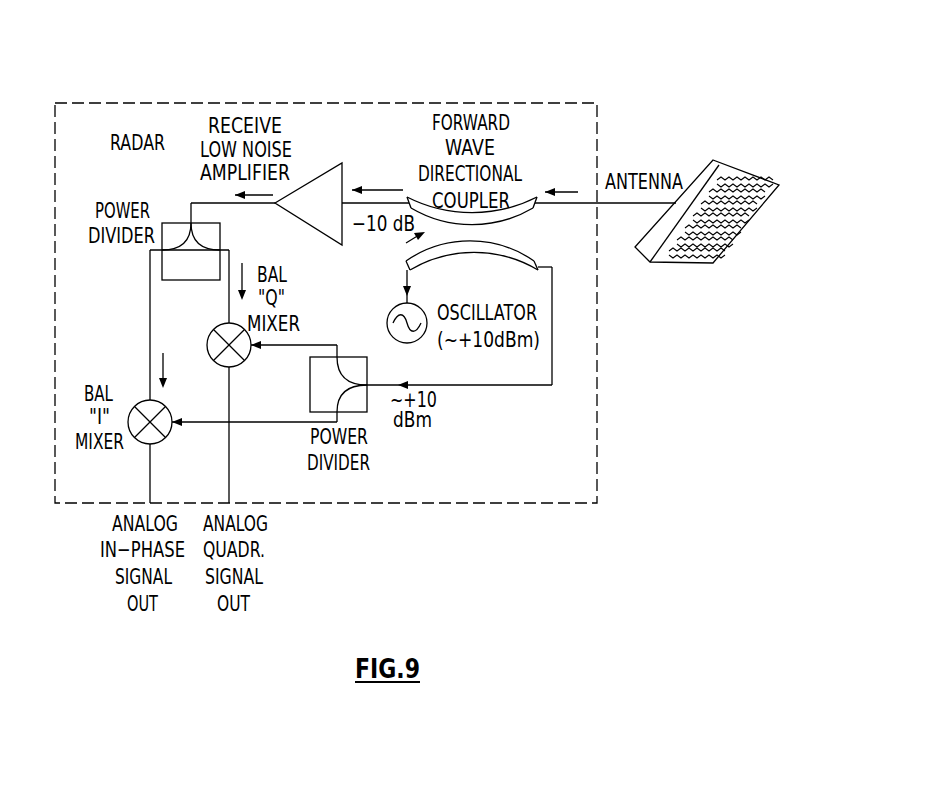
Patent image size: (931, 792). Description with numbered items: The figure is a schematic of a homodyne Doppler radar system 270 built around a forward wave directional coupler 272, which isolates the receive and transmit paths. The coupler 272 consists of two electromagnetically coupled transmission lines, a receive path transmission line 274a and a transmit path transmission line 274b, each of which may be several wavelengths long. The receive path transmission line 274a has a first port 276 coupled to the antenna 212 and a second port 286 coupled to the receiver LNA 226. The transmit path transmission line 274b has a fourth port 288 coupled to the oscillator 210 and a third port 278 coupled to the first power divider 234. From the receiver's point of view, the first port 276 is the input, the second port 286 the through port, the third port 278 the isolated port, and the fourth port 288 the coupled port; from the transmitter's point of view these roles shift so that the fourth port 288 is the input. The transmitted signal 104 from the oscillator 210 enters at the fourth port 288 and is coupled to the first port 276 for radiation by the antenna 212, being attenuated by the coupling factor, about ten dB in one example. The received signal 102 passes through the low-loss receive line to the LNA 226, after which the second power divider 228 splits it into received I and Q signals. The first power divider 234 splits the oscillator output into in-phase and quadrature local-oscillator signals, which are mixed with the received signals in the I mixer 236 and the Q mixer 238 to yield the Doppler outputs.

The homodyne Doppler radar system 270 is at (626, 58).
The received signal 102 is at (676, 196).
The antenna 212 is at (737, 161).
The forward wave directional coupler 272 is at (467, 207).
The receive path transmission line 274a is at (455, 169).
The transmit path transmission line 274b is at (470, 265).
The first port 276 is at (532, 201).
The third port 278 is at (540, 266).
The second port 286 is at (408, 200).
The fourth port 288 is at (407, 265).
The transmitted signal 104 is at (407, 243).
The receiver LNA 226 is at (327, 170).
The second power divider 228 is at (171, 223).
The oscillator 210 is at (391, 341).
The first power divider 234 is at (367, 403).
The I mixer 236 is at (158, 443).
The Q mixer 238 is at (241, 362).